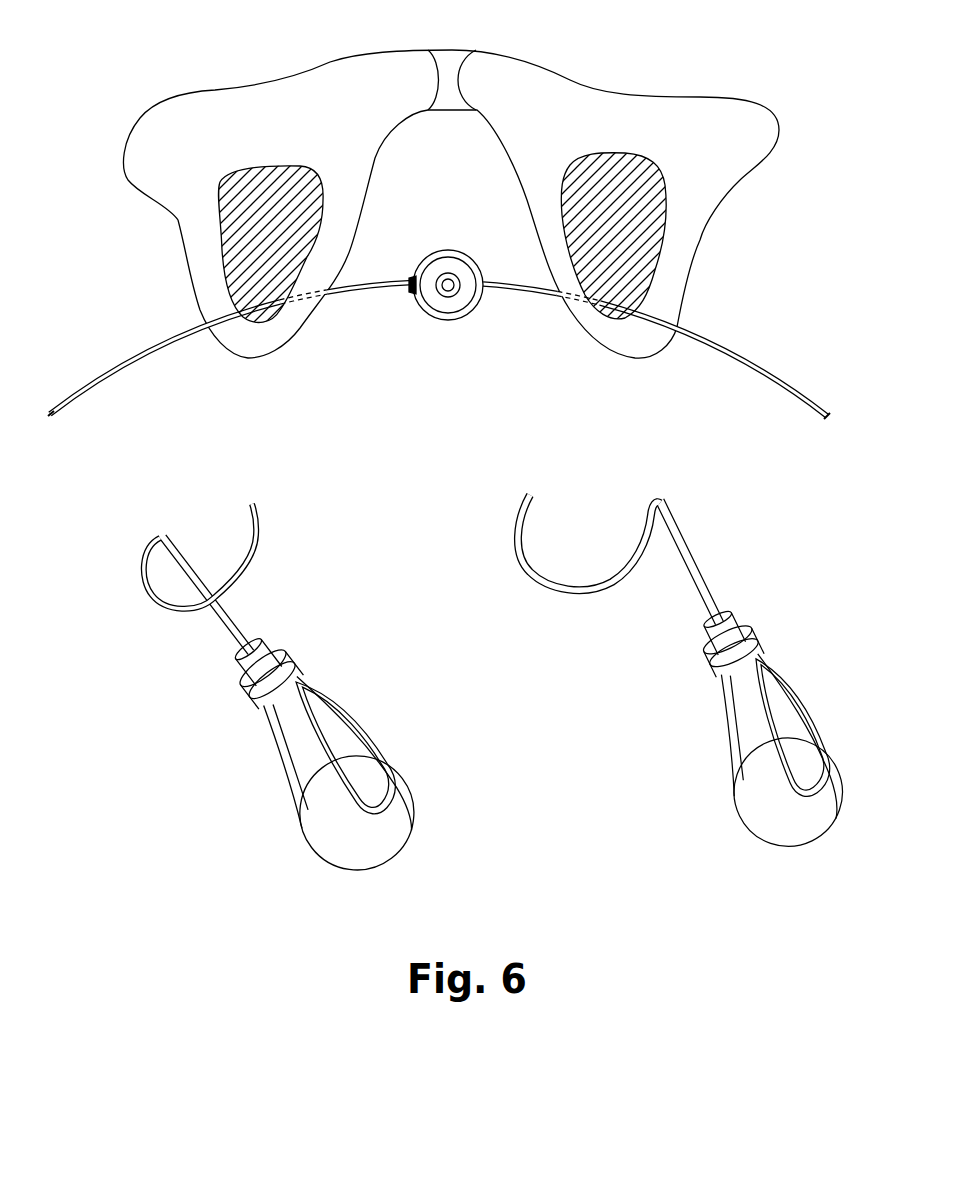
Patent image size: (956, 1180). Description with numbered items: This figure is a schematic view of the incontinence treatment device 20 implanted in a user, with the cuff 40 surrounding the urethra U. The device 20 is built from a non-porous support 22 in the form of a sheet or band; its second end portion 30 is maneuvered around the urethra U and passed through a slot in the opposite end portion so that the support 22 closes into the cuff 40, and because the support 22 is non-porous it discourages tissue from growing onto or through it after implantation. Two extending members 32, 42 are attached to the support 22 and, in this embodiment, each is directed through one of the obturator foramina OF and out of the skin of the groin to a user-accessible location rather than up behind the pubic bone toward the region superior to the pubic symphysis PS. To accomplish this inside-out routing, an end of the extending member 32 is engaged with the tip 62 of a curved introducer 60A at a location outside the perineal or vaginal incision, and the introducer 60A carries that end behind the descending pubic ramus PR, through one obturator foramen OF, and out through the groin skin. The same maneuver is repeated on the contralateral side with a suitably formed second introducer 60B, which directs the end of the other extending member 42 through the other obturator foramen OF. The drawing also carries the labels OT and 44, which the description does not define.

The pubic symphysis PS is at (448, 62).
The obturator foramen OF is at (251, 153).
The tooth OT is at (228, 262).
The descending pubic ramus PR is at (309, 310).
The incontinence treatment device 20 is at (437, 296).
The support 22 is at (436, 251).
The cuff 40 is at (460, 258).
The wire attachment 44 is at (415, 297).
The urethra U is at (448, 296).
The second end portion 30 is at (770, 368).
The extending member 32 is at (125, 365).
The extending member 42 is at (777, 385).
The introducer 60A is at (271, 694).
The second introducer 60B is at (778, 665).
The tip 62 is at (255, 503).